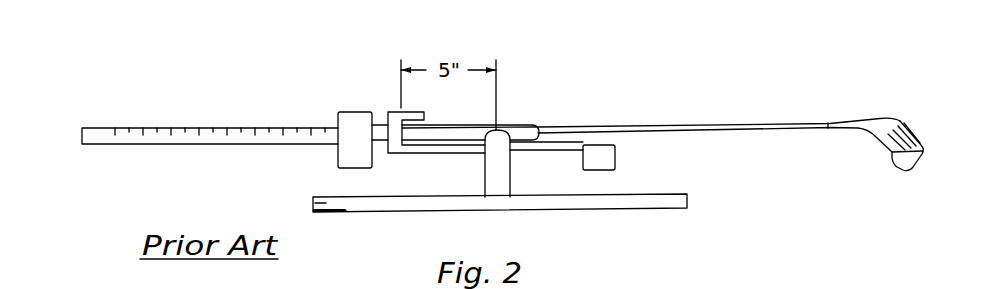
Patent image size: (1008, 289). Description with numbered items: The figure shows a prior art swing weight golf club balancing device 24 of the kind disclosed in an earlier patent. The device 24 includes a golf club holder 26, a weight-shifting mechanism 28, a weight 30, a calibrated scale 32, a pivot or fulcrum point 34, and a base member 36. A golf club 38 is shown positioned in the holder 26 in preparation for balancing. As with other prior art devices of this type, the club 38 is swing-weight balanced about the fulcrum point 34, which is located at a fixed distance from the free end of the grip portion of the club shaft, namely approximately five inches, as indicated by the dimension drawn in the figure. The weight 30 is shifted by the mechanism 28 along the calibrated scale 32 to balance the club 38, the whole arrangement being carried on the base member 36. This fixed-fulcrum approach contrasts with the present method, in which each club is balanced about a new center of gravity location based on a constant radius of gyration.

The prior art swing weight golf club balancing device 24 is at (369, 237).
The golf club holder 26 is at (430, 115).
The weight-shifting mechanism 28 is at (333, 119).
The weight 30 is at (352, 156).
The calibrated scale 32 is at (128, 148).
The pivot or fulcrum point 34 is at (497, 147).
The base member 36 is at (640, 202).
The golf club 38 is at (737, 124).